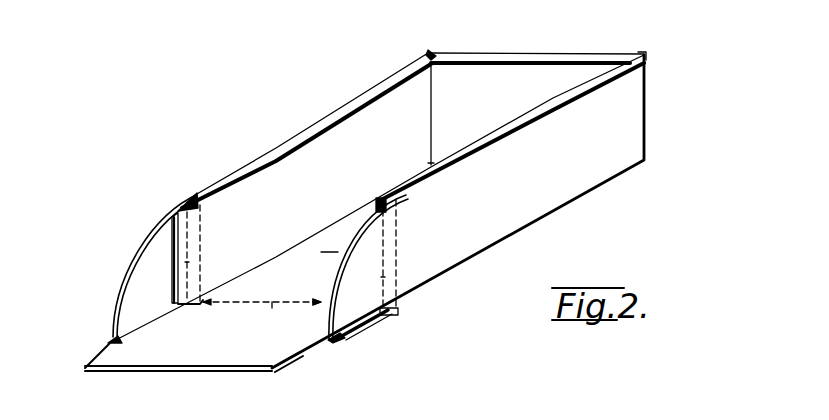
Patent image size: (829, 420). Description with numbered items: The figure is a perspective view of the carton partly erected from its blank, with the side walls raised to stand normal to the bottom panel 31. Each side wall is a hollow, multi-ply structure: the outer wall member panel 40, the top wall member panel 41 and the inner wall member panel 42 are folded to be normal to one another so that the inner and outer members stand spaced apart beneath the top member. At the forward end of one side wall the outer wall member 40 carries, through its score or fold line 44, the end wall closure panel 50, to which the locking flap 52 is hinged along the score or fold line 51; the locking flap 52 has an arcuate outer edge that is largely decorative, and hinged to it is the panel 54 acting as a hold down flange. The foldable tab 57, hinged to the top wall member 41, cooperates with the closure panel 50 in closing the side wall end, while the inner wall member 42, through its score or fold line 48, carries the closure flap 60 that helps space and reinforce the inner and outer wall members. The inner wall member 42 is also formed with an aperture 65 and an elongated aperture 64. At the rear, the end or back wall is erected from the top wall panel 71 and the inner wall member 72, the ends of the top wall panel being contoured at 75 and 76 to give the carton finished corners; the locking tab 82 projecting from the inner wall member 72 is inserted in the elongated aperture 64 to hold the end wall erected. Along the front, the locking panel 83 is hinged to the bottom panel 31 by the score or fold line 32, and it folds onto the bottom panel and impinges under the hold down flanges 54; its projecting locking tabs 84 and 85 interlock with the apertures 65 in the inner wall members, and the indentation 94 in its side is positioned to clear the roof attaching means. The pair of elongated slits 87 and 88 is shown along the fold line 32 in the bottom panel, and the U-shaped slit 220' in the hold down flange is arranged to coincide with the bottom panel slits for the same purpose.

The bottom panel 31 is at (329, 243).
The score or fold line 32 is at (268, 313).
The side wall outer wall member panel 40 is at (550, 206).
The side wall top wall member panel 41 is at (344, 107).
The side wall inner wall member panel 42 is at (303, 146).
The score or fold line 44 is at (399, 250).
The score or fold line 48 is at (203, 226).
The side wall end wall closure panel 50 is at (198, 242).
The score or fold line 51 is at (188, 262).
The locking flap 52 is at (147, 247).
The hold down flange 54 is at (103, 340).
The foldable tab 57 is at (200, 197).
The closure flap 60 is at (177, 267).
The elongated apertures 64 is at (433, 163).
The apertures 65 is at (274, 257).
The end wall top wall member panel 71 is at (599, 58).
The end wall inner wall member 72 is at (509, 71).
The contour 75 is at (439, 53).
The contour 76 is at (635, 53).
The locking tab 82 is at (434, 153).
The locking panel 83 is at (245, 363).
The locking tab 84 is at (107, 350).
The locking tab 85 is at (302, 348).
The elongated aperture or slit 87 is at (323, 300).
The elongated aperture or slit 88 is at (253, 299).
The indentation 94 is at (195, 308).
The pad 220' is at (417, 308).